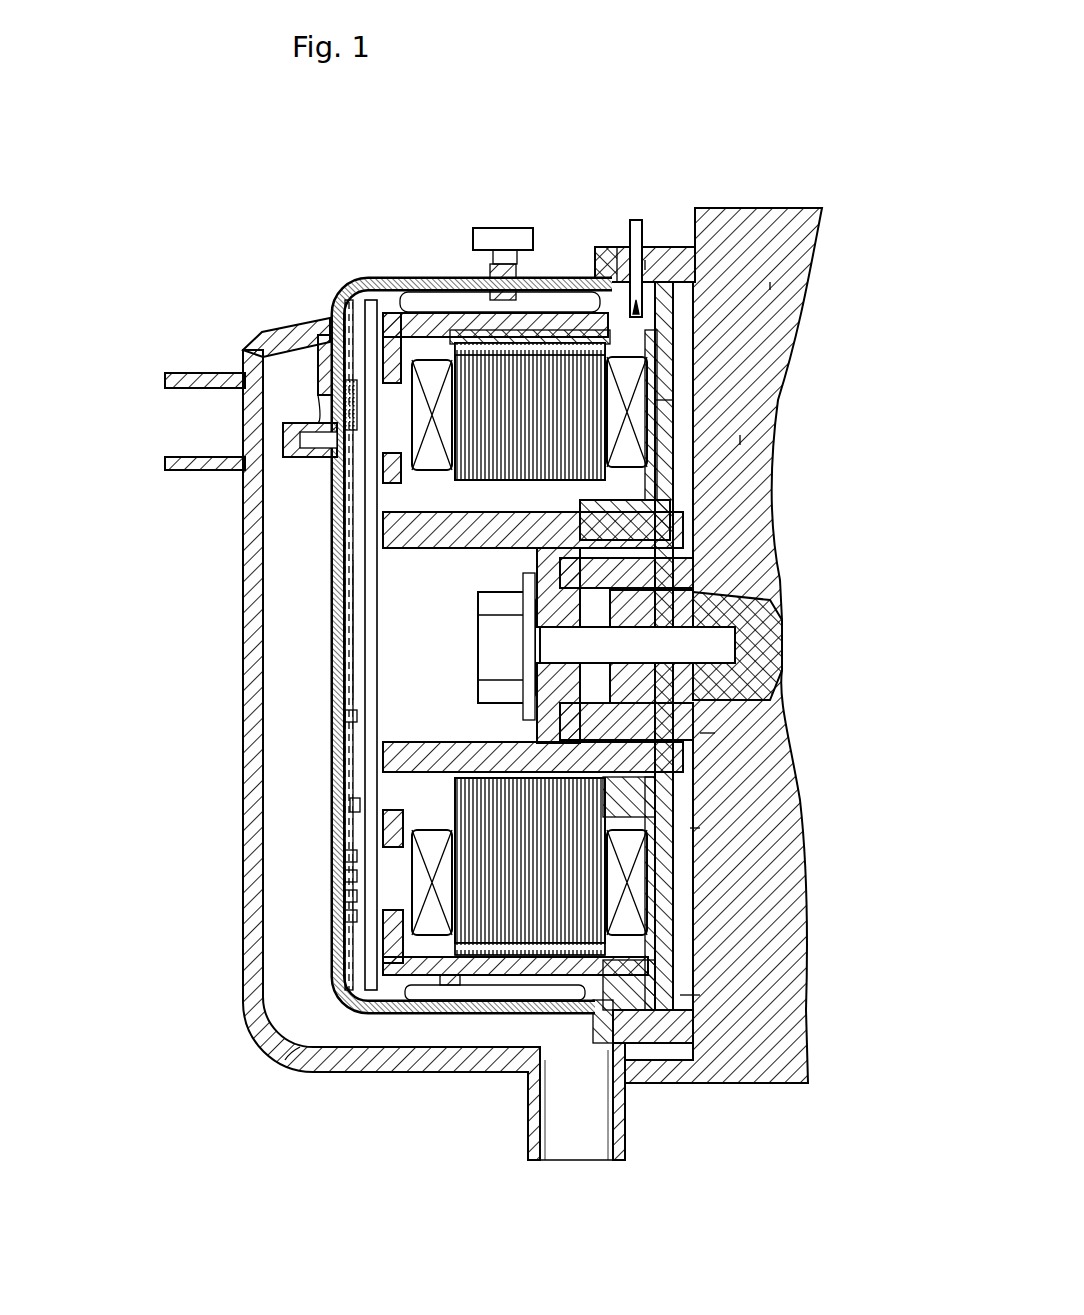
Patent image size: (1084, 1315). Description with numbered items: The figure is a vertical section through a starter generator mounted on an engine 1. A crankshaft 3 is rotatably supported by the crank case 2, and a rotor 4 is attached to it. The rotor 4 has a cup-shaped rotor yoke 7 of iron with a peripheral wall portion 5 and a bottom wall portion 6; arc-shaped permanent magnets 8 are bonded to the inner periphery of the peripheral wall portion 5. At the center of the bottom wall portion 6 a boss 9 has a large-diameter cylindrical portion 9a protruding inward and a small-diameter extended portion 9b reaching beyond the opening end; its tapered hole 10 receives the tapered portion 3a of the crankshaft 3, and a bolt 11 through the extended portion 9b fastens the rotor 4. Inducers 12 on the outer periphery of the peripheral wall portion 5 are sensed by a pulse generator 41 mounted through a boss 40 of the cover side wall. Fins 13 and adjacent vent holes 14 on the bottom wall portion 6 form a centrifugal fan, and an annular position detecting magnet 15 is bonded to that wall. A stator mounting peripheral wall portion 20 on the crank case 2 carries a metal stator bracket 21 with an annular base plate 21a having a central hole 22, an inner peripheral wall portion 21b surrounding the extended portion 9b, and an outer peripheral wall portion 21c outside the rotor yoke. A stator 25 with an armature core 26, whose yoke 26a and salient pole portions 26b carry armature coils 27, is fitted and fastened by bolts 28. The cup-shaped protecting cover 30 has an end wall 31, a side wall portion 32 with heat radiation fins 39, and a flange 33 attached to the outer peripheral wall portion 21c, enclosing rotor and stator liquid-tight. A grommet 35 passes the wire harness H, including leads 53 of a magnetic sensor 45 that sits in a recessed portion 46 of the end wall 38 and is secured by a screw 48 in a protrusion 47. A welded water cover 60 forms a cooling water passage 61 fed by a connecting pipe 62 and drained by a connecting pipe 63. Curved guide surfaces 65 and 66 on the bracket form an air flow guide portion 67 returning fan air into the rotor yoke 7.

The engine 1 is at (755, 210).
The crank case 2 is at (800, 235).
The crankshaft 3 is at (735, 600).
The tapered portion 3a is at (535, 562).
The rotor 4 is at (395, 310).
The peripheral wall portion 5 is at (460, 316).
The bottom wall portion 6 is at (370, 480).
The rotor yoke 7 is at (342, 992).
The permanent magnets 8 is at (588, 340).
The boss 9 is at (330, 720).
The cylindrical portion 9a is at (390, 556).
The extended portion 9b is at (628, 505).
The tapered hole 10 is at (740, 660).
The bolt 11 is at (492, 645).
The inducers 12 is at (560, 335).
The fins 13 is at (372, 290).
The vent holes 14 is at (300, 340).
The position detecting magnet 15 is at (348, 802).
The stator mounting peripheral wall portion 20 is at (680, 250).
The stator bracket 21 is at (670, 352).
The base plate 21a is at (665, 408).
The inner peripheral wall portion 21b is at (640, 700).
The outer peripheral wall portion 21c is at (660, 1066).
The hole 22 is at (715, 735).
The stator 25 is at (770, 286).
The armature core 26 is at (650, 925).
The yoke 26a is at (660, 792).
The salient pole portions 26b is at (700, 882).
The armature coils 27 is at (628, 395).
The bolts 28 is at (750, 442).
The protecting cover 30 is at (300, 1042).
The end wall 31 is at (330, 673).
The side wall portion 32 is at (450, 1030).
The flange 33 is at (575, 1100).
The grommet 35 is at (650, 265).
The end wall 38 is at (330, 700).
The heat radiation fins 39 is at (445, 300).
The boss 40 is at (470, 275).
The pulse generator 41 is at (510, 228).
The magnetic sensor 45 is at (345, 400).
The recessed portion 46 is at (355, 480).
The protrusion 47 is at (332, 440).
The screw 48 is at (290, 437).
The leads 53 is at (340, 295).
The water cover 60 is at (250, 960).
The cooling water passage 61 is at (300, 768).
The connecting pipe 62 is at (190, 372).
The connecting pipe 63 is at (530, 1155).
The curved guide surface 65 is at (690, 1000).
The curved guide surface 66 is at (692, 830).
The air flow guide portion 67 is at (720, 1040).
The wire harness H is at (636, 222).